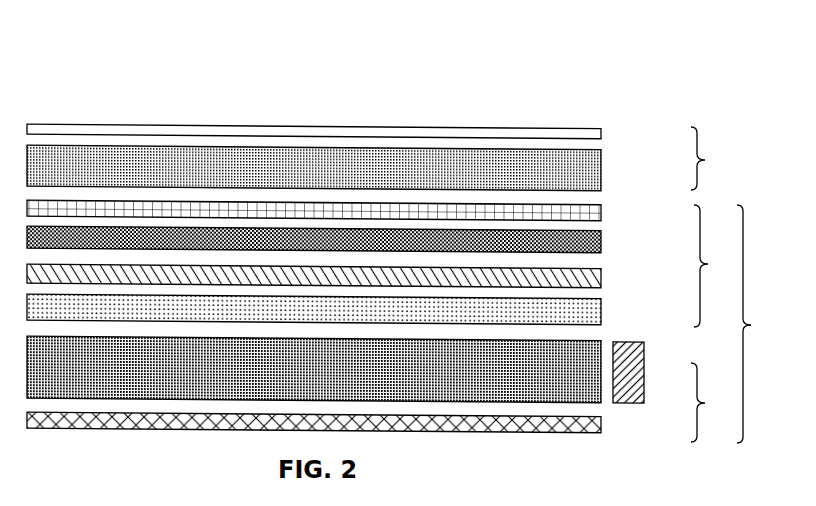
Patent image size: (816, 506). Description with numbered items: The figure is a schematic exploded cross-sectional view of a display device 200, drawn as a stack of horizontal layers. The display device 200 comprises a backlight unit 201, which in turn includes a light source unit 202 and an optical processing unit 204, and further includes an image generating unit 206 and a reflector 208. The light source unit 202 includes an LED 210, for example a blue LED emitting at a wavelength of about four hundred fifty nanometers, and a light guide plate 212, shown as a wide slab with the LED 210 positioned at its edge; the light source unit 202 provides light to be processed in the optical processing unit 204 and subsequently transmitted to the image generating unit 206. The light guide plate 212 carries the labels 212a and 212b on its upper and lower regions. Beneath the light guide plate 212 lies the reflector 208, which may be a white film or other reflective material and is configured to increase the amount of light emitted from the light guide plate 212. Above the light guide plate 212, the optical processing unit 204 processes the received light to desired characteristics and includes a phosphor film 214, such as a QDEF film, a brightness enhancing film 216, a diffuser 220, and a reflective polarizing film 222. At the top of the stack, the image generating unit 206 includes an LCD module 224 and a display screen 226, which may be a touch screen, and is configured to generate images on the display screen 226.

The display device 200 is at (609, 72).
The backlight unit 201 is at (760, 324).
The light source unit 202 is at (714, 402).
The optical processing unit 204 is at (716, 266).
The image generating unit 206 is at (716, 158).
The reflector 208 is at (565, 433).
The LED 210 is at (644, 375).
The light guide plate 212 is at (583, 397).
The light guide top surface 212a is at (409, 337).
The light guide bottom surface 212b is at (261, 404).
The phosphor film 214 is at (601, 312).
The brightness enhancing film 216 is at (601, 277).
The diffuser 220 is at (601, 240).
The reflective polarizing film 222 is at (601, 211).
The LCD module 224 is at (601, 171).
The display screen 226 is at (601, 133).